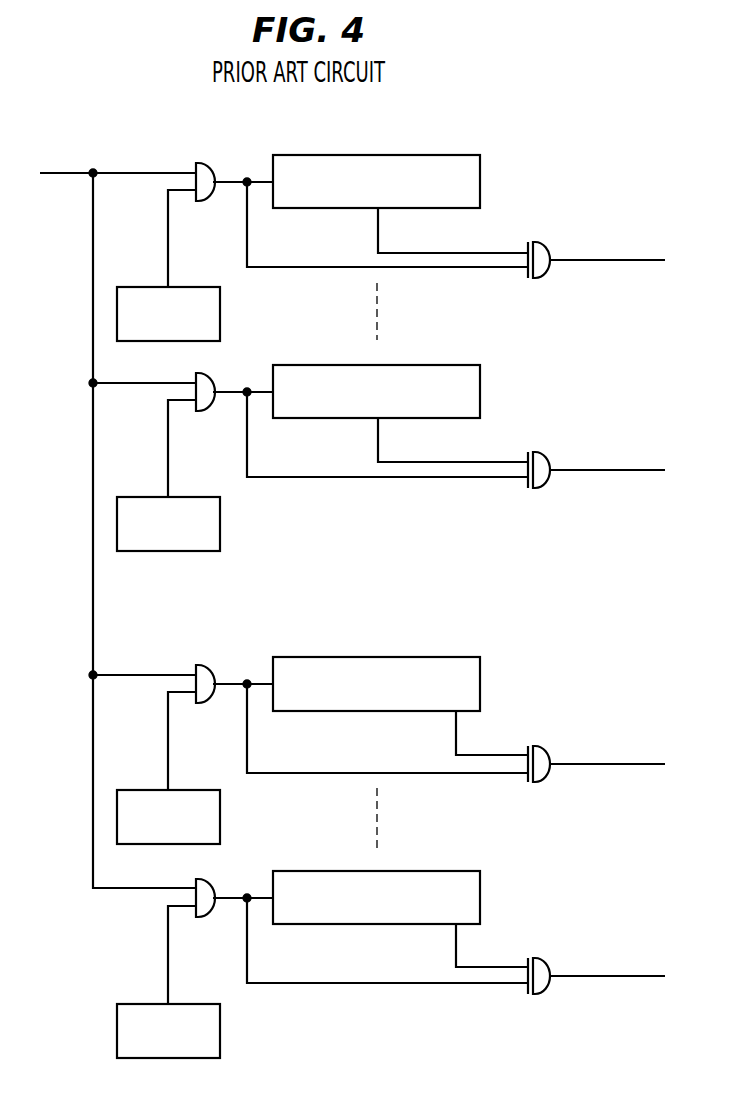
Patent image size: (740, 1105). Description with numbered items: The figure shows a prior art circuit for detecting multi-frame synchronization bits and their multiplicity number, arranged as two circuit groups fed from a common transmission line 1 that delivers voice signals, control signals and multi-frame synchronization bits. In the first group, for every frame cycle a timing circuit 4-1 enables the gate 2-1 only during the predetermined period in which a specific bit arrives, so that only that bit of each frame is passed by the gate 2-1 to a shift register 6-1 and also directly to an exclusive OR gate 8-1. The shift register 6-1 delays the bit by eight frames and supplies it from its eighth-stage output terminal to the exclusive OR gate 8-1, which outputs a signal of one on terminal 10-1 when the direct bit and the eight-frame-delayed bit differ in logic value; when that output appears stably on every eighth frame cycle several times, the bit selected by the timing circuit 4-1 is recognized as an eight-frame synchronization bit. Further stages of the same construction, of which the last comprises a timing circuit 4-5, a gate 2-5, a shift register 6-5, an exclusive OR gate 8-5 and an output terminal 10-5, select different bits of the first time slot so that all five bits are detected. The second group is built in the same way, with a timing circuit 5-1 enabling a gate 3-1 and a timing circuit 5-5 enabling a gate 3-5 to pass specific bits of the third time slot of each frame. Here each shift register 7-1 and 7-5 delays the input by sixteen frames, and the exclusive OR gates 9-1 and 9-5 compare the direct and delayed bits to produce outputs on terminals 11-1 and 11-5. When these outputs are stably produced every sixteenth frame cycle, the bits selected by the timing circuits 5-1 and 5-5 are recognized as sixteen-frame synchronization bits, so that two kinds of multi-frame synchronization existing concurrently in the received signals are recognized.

The transmission line 1 is at (57, 172).
The gate 2-1 is at (200, 163).
The gate 2-5 is at (200, 373).
The gate 3-1 is at (200, 665).
The gate 3-5 is at (211, 868).
The timing circuit 4-1 is at (221, 303).
The timing circuit 4-5 is at (221, 513).
The timing circuit 5-1 is at (213, 810).
The timing circuit 5-5 is at (217, 1027).
The shift register 6-1 is at (470, 165).
The shift register 6-5 is at (470, 375).
The shift register 7-1 is at (472, 665).
The shift register 7-5 is at (472, 879).
The exclusive OR gate 8-1 is at (536, 245).
The exclusive OR gate 8-5 is at (536, 455).
The exclusive OR gate 9-1 is at (536, 750).
The exclusive OR gate 9-5 is at (536, 962).
The terminal 10-1 is at (640, 260).
The terminal 10-5 is at (640, 470).
The terminal 11-1 is at (638, 764).
The terminal 11-5 is at (632, 976).